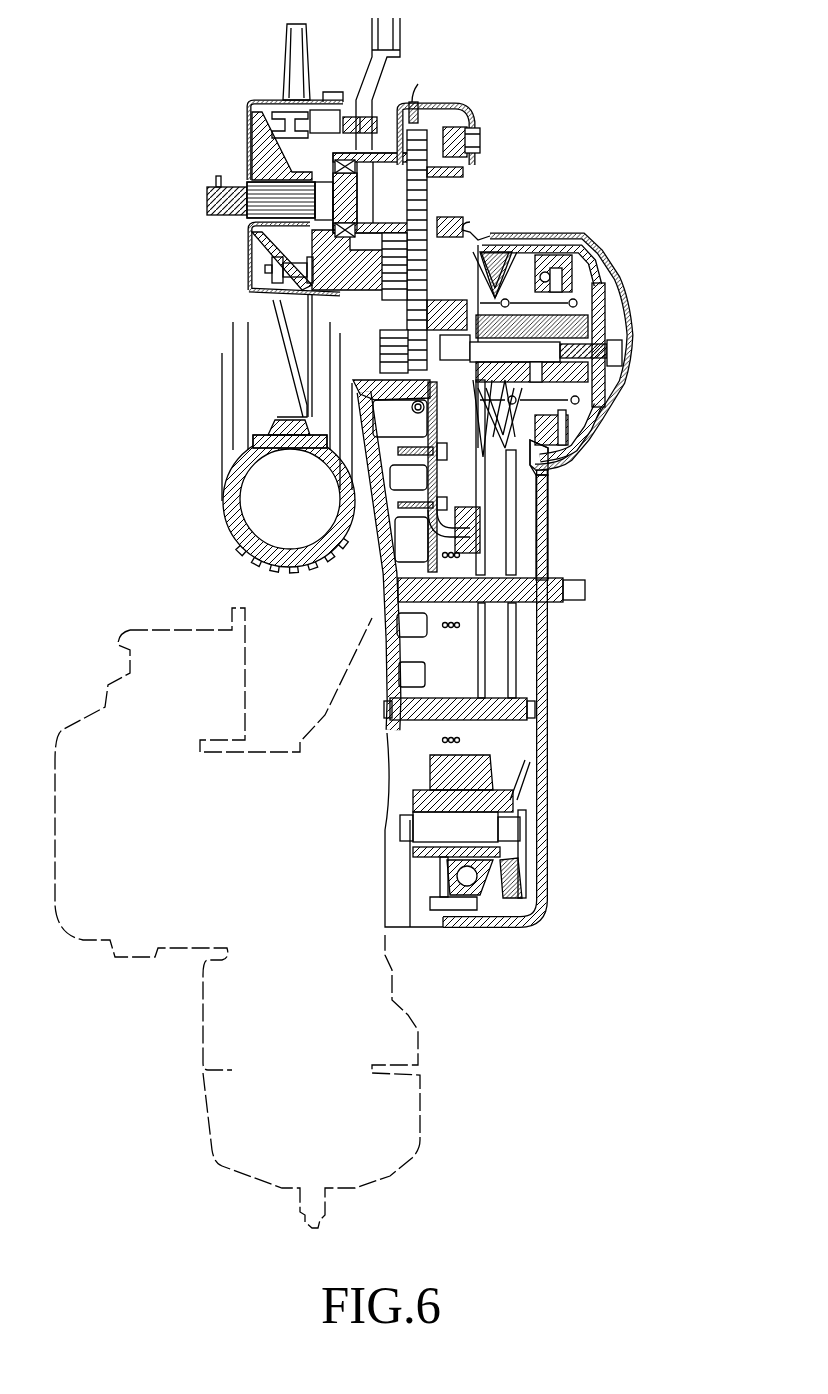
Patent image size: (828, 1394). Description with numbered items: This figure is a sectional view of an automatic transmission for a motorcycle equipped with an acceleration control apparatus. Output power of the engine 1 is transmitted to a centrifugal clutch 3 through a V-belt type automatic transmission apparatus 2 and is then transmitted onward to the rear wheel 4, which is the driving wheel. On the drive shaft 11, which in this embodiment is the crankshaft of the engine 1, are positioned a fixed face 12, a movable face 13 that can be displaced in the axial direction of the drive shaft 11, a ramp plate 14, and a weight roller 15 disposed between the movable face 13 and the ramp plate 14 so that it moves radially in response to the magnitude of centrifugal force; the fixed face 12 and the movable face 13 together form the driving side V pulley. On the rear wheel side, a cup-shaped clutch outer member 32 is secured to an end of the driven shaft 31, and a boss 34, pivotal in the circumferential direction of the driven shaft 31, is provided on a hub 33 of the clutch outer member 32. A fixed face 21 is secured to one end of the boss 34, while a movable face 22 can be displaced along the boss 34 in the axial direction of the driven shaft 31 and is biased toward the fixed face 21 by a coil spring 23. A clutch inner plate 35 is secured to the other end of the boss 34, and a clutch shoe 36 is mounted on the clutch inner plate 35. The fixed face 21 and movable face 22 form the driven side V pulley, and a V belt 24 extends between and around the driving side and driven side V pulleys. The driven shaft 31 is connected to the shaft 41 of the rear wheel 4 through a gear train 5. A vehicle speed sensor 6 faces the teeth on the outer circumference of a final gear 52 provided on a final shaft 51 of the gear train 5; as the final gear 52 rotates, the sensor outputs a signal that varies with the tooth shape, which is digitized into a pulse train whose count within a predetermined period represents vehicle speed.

The engine 1 is at (422, 1122).
The V-belt type automatic transmission apparatus 2 is at (565, 730).
The centrifugal clutch 3 is at (643, 292).
The rear wheel 4 is at (225, 441).
The gear train 5 is at (447, 148).
The vehicle speed sensor 6 is at (416, 102).
The drive shaft 11 is at (395, 835).
The fixed face 12 is at (530, 892).
The movable face 13 is at (490, 900).
The ramp plate 14 is at (450, 888).
The weight roller 15 is at (460, 898).
The fixed face 21 is at (485, 422).
The movable face 22 is at (517, 457).
The coil spring 23 is at (565, 400).
The V belt 24 is at (491, 268).
The driven shaft 31 is at (598, 352).
The clutch outer member 32 is at (585, 262).
The hub 33 is at (605, 378).
The boss 34 is at (545, 440).
The clutch inner plate 35 is at (578, 300).
The clutch shoe 36 is at (553, 252).
The shaft of the rear wheel 41 is at (262, 190).
The final shaft 51 is at (375, 188).
The final gear 52 is at (430, 195).